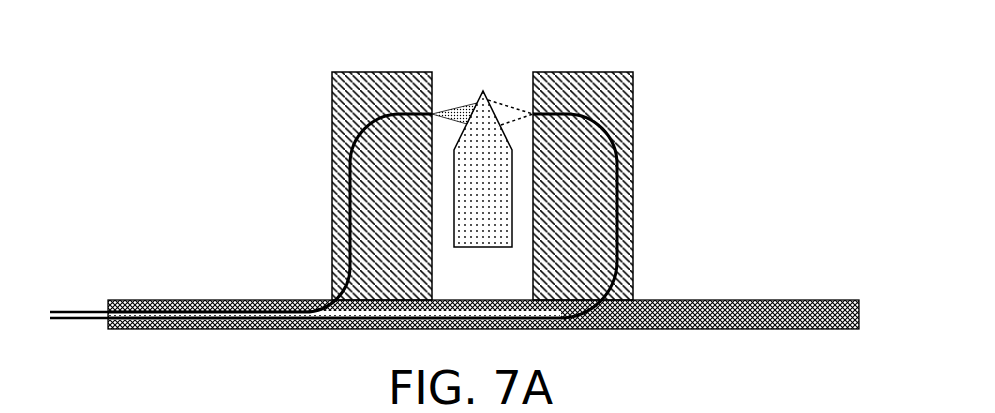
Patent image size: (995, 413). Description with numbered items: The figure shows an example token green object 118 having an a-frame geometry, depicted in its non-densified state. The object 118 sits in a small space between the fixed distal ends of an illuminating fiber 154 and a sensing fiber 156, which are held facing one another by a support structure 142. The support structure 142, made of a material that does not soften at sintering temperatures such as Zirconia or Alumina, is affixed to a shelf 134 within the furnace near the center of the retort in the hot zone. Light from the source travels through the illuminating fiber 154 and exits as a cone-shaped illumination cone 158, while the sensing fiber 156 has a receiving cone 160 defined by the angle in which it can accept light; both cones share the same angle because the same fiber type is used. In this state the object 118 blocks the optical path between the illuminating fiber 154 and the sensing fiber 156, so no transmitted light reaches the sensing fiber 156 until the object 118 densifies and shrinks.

The token green object 118 is at (496, 175).
The shelf 134 is at (750, 300).
The support structure 142 is at (355, 72).
The illuminating fiber 154 is at (358, 137).
The sensing fiber 156 is at (605, 138).
The illumination cone 158 is at (465, 103).
The receiving cone 160 is at (503, 103).